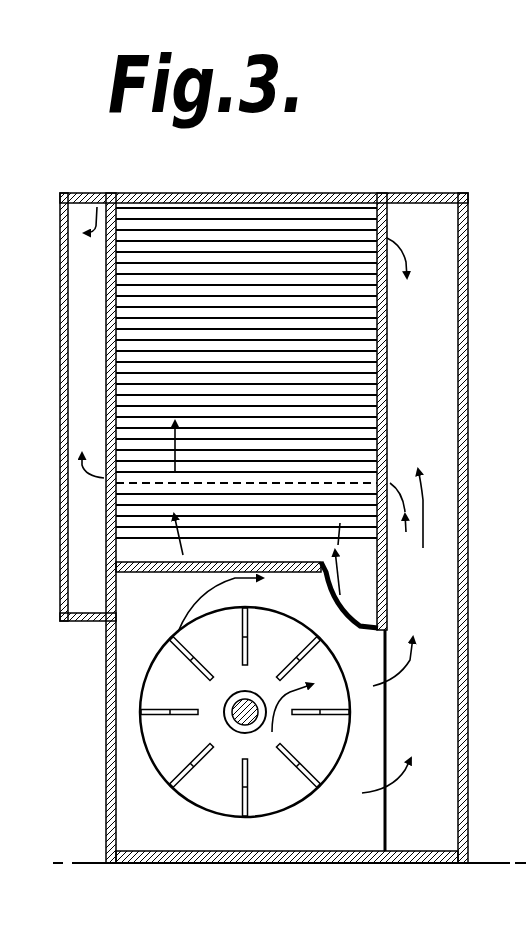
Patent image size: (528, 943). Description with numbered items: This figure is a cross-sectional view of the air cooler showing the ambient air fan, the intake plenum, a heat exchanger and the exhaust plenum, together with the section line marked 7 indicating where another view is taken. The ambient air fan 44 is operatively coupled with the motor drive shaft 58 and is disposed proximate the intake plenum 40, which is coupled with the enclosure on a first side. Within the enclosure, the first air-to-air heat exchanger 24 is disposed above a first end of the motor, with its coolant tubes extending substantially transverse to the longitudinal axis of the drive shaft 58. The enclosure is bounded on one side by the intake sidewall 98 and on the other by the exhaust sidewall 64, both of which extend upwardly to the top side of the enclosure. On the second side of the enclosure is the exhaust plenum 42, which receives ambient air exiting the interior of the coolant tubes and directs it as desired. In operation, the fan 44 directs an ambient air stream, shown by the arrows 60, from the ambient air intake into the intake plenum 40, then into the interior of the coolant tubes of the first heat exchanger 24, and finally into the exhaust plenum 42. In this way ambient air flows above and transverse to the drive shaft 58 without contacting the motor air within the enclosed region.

The first air-to-air heat exchanger 24 is at (327, 213).
The intake plenum 40 is at (468, 310).
The exhaust plenum 42 is at (63, 238).
The ambient air fan 44 is at (240, 800).
The motor drive shaft 58 is at (233, 716).
The ambient air stream arrows 60 is at (100, 193).
The exhaust sidewall 64 is at (106, 381).
The intake sidewall 98 is at (387, 335).
The section line 7- 7 is at (198, 155).